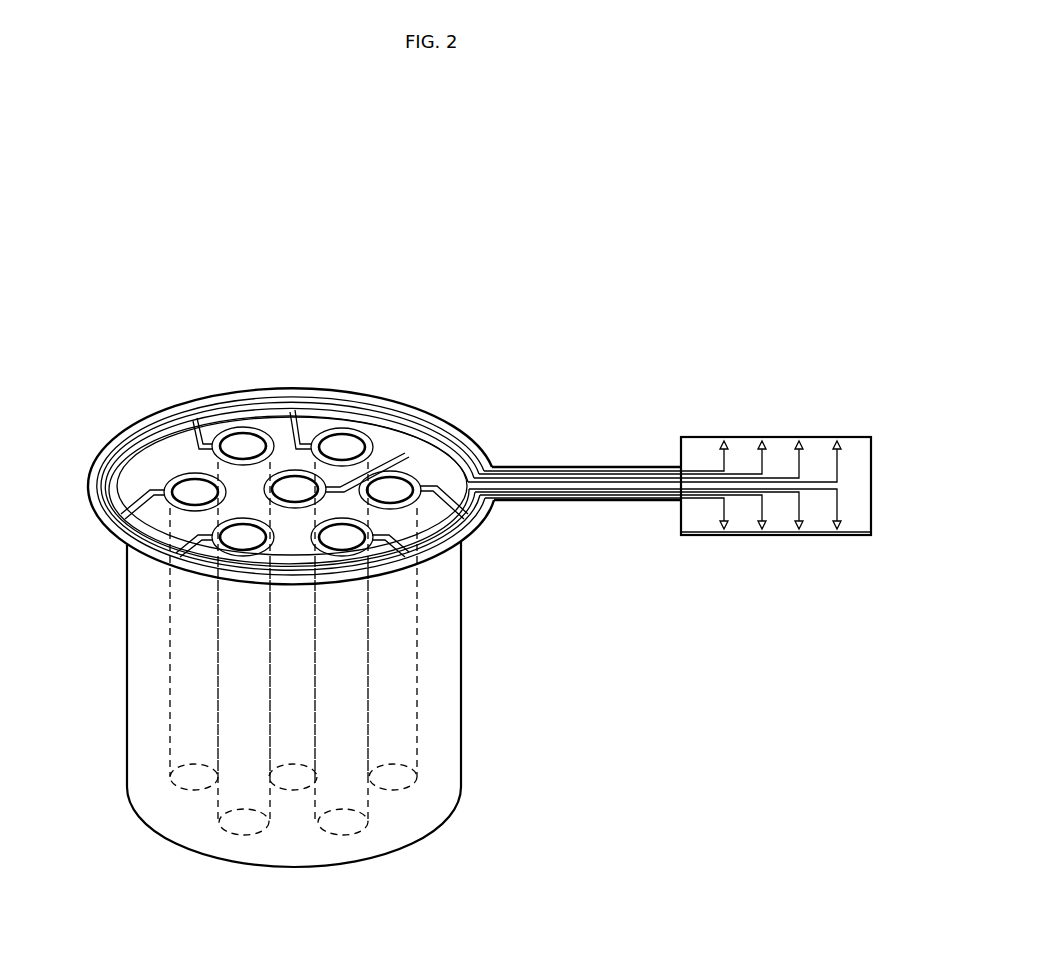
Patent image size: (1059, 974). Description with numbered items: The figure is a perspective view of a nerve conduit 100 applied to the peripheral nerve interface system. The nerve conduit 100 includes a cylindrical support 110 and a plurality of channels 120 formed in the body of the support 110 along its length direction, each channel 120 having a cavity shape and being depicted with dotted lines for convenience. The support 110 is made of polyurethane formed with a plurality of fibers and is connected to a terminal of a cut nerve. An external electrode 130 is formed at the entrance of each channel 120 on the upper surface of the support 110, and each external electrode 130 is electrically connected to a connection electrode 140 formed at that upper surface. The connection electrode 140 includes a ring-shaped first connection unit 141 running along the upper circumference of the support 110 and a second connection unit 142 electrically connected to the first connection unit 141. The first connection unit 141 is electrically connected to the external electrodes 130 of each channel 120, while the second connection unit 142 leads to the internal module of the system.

The nerve conduit 100 is at (133, 298).
The support 110 is at (148, 668).
The channels 120 is at (182, 722).
The external electrode 130 is at (150, 480).
The connection electrode 140 is at (552, 466).
The first connection unit 141 is at (208, 402).
The second connection unit 142 is at (616, 478).